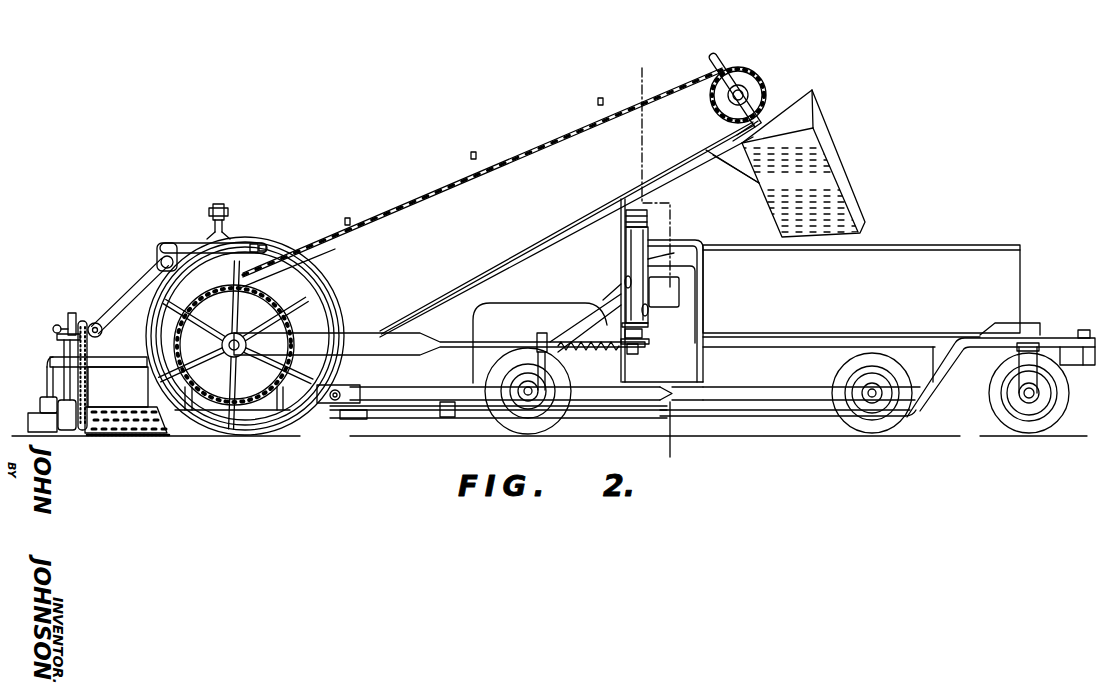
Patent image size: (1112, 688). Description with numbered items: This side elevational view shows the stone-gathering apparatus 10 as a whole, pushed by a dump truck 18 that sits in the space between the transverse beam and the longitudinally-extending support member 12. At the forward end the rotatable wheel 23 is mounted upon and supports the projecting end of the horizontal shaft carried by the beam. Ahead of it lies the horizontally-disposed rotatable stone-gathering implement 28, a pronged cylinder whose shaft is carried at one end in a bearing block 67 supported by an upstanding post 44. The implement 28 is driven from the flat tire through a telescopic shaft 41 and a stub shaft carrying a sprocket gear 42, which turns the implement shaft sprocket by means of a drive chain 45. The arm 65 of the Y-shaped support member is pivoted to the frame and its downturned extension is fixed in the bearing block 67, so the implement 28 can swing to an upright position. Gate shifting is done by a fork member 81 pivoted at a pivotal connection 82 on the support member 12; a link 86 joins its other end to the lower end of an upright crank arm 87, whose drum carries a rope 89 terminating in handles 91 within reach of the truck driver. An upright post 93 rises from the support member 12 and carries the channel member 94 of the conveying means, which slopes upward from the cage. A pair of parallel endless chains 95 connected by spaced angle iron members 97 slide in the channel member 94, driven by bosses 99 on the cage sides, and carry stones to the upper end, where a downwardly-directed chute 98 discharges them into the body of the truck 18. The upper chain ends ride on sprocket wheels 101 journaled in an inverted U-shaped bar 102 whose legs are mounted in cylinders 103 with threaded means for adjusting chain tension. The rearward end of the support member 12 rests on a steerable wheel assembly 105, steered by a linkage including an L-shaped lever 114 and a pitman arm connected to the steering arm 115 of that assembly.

The harvesting machine 10 is at (642, 68).
The support member 12 is at (770, 392).
The dump truck 18 is at (702, 240).
The rotatable wheel 23 is at (287, 427).
The stone-gathering implement 28 is at (143, 438).
The telescopic shaft 41 is at (122, 298).
The sprocket gear 42 is at (103, 333).
The upstanding post 44 is at (74, 314).
The drive chain 45 is at (98, 381).
The arm of Y-shaped support member 65 is at (113, 362).
The bearing block 67 is at (40, 406).
The fork member 81 is at (355, 342).
The pivotal connection 82 is at (538, 334).
The link 86 is at (646, 344).
The crank arm 87 is at (638, 355).
The rope 89 is at (671, 263).
The handles 91 is at (648, 316).
The upright post 93 is at (621, 262).
The channel member 94 is at (533, 252).
The endless chain 95 is at (412, 208).
The angle iron members 97 is at (350, 222).
The chute 98 is at (848, 184).
The bosses 99 is at (262, 280).
The sprocket wheels 101 is at (720, 106).
The inverted U-shaped bar 102 is at (736, 83).
The cylinder 103 is at (716, 164).
The steerable wheel assembly 105 is at (1047, 334).
The L-shaped lever 114 is at (1025, 378).
The steering arm 115 is at (1060, 402).